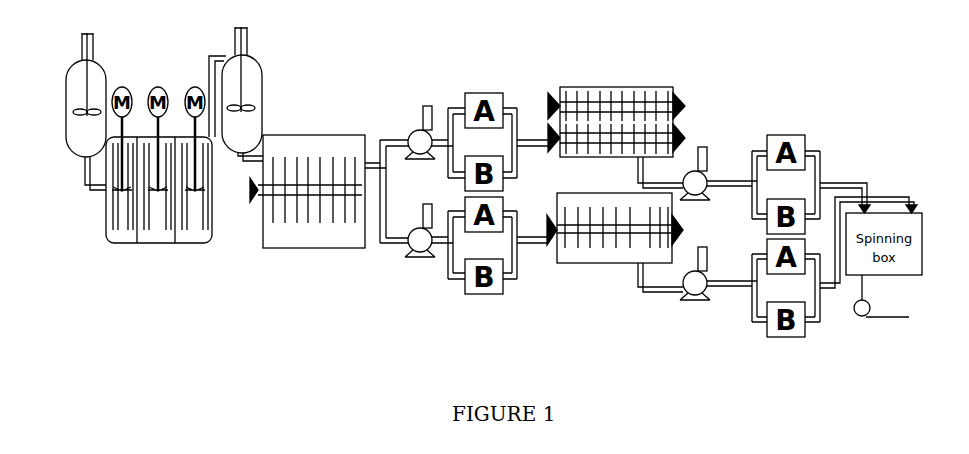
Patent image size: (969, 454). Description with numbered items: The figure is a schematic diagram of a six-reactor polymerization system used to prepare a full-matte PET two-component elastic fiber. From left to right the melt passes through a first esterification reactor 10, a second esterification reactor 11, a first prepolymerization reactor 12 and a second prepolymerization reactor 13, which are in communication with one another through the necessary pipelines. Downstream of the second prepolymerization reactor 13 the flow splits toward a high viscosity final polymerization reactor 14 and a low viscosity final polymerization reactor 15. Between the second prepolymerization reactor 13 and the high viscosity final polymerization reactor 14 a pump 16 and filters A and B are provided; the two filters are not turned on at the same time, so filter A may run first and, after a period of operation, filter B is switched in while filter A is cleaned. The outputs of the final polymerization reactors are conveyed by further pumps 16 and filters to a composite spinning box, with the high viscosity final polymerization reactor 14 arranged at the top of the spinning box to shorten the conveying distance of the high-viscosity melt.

The first esterification reactor 10 is at (76, 137).
The second esterification reactor 11 is at (160, 240).
The first prepolymerization reactor 12 is at (252, 72).
The second prepolymerization reactor 13 is at (307, 237).
The high viscosity final polymerization reactor 14 is at (652, 90).
The low viscosity final polymerization reactor 15 is at (592, 247).
The pump 16 is at (422, 148).